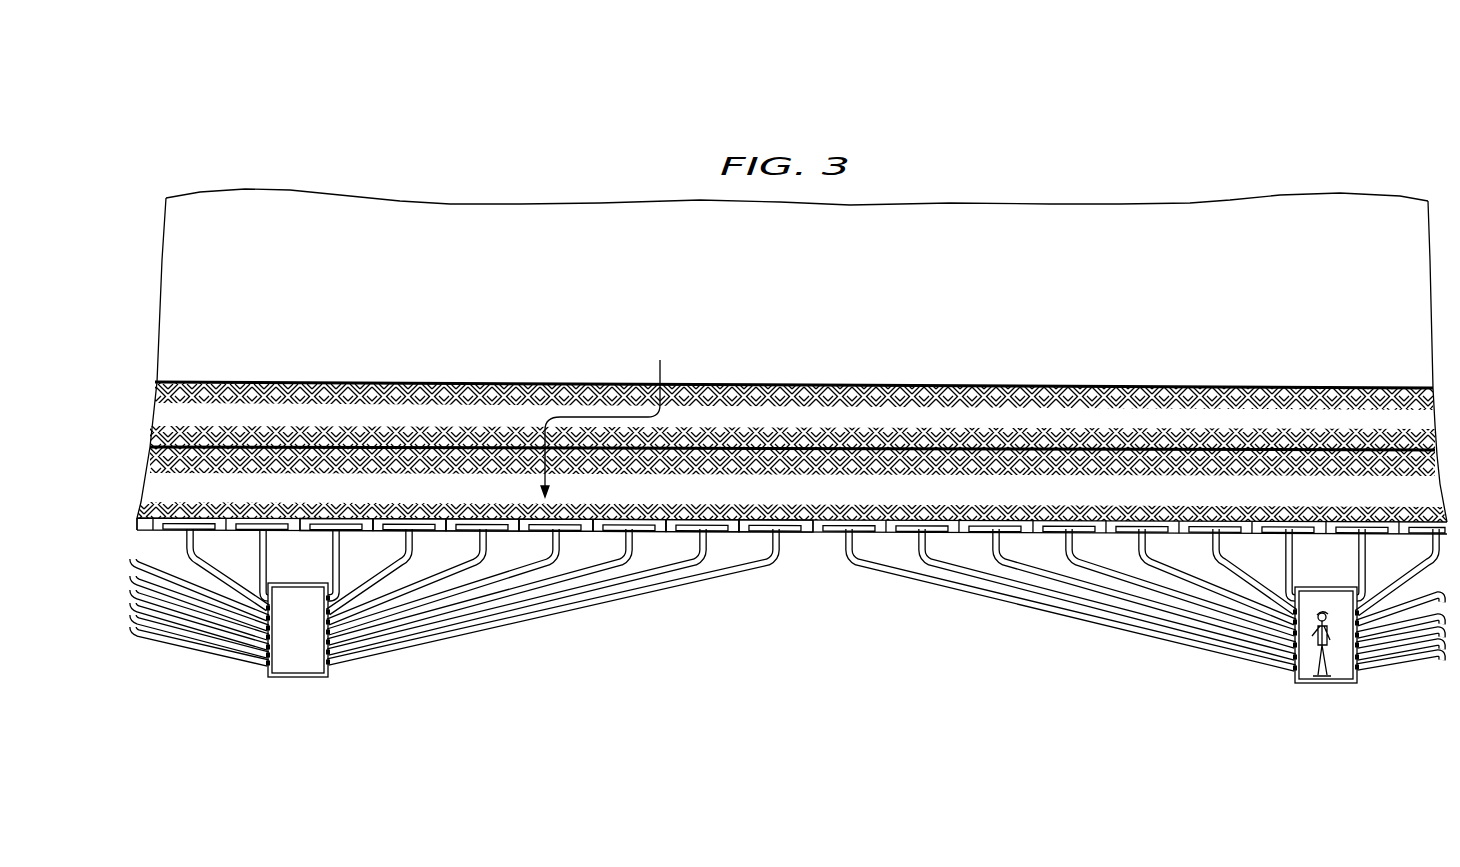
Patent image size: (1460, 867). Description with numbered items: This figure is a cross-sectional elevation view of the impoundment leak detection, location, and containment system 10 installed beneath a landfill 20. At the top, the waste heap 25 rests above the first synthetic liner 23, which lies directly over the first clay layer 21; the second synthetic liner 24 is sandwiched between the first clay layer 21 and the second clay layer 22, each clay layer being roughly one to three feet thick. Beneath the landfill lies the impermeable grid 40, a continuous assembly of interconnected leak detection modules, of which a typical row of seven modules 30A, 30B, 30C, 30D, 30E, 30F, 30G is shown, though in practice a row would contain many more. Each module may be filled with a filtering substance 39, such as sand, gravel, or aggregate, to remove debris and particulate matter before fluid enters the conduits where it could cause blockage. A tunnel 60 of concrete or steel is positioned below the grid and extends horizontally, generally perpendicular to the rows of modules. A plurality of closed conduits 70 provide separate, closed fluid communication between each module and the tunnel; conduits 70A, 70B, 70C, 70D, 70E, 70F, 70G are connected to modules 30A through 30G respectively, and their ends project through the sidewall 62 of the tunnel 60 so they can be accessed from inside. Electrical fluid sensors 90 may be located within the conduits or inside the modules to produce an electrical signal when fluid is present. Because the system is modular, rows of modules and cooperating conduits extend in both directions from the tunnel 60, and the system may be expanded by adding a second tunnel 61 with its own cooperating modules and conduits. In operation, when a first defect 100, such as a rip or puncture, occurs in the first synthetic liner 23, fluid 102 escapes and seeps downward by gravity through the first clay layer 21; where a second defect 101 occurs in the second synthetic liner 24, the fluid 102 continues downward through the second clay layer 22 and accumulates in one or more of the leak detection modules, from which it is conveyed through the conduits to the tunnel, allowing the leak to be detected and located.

The impoundment leak detection, location, and containment system 10 is at (792, 576).
The landfill 20 is at (789, 322).
The first clay layer 21 is at (1436, 422).
The second clay layer 22 is at (1440, 484).
The first synthetic liner 23 is at (1056, 383).
The second synthetic liner 24 is at (1264, 445).
The waste heap 25 is at (1138, 205).
The filtering substance 39 is at (1292, 521).
The impermeable grid 40 is at (138, 515).
The leak detection module 30A is at (328, 516).
The leak detection module 30B is at (390, 516).
The leak detection module 30C is at (453, 516).
The leak detection module 30D is at (583, 516).
The leak detection module 30E is at (652, 516).
The leak detection module 30F is at (720, 516).
The leak detection module 30G is at (790, 516).
The closed conduits 70 is at (787, 606).
The conduit 70A is at (331, 556).
The conduit 70B is at (404, 543).
The conduit 70C is at (478, 543).
The conduit 70D is at (551, 543).
The conduit 70E is at (624, 543).
The conduit 70F is at (698, 543).
The conduit 70G is at (771, 543).
The tunnel 60 is at (310, 657).
The second tunnel 61 is at (1325, 685).
The sidewall 62 is at (322, 622).
The electrical fluid sensors 90 is at (336, 668).
The first defect 100 is at (665, 380).
The second defect 101 is at (533, 433).
The fluid 102 is at (518, 469).